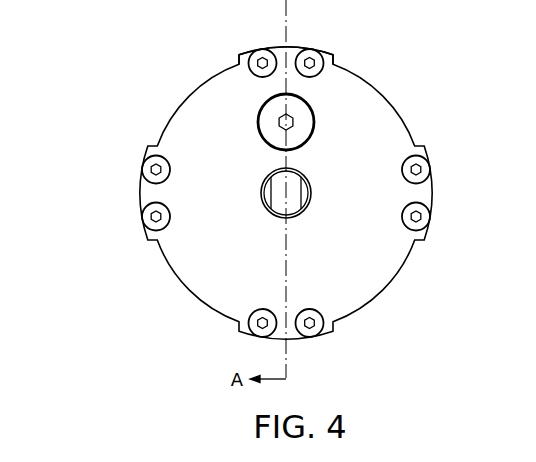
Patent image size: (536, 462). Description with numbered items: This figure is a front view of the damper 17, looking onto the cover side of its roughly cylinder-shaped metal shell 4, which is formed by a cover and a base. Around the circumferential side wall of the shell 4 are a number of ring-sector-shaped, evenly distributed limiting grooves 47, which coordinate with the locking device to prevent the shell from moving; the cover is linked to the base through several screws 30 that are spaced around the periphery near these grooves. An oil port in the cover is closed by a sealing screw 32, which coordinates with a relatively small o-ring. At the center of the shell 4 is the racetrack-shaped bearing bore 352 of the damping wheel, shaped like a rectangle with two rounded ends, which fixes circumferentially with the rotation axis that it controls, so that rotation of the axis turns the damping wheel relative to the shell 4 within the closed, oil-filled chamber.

The shell 4 is at (363, 257).
The limiting grooves 47 is at (334, 63).
The screws 30 is at (146, 166).
The sealing screw 32 is at (270, 115).
The bearing bore 352 is at (275, 198).
The damper 17 is at (132, 93).